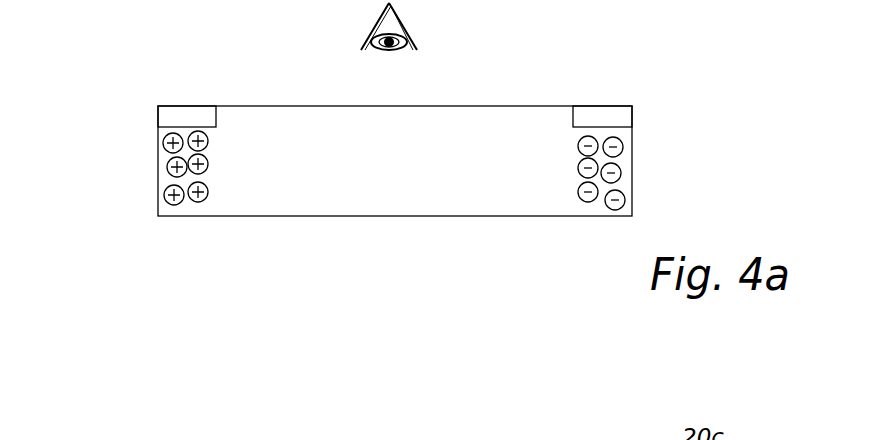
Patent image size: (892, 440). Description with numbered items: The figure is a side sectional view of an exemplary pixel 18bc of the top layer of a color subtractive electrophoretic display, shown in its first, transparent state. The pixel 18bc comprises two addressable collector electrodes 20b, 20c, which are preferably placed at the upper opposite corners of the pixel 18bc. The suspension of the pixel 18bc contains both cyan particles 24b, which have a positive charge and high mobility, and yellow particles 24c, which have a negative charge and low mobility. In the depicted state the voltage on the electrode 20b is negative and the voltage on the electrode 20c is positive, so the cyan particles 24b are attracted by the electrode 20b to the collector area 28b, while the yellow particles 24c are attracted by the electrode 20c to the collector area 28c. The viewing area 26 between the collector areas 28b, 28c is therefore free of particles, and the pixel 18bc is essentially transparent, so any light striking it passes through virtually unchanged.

The pixel 18bc is at (698, 163).
The collector electrode 20b is at (168, 118).
The collector electrode 20c is at (622, 117).
The cyan particles 24b is at (205, 199).
The yellow particles 24c is at (621, 174).
The viewing area 26 is at (572, 223).
The collector area 28b is at (217, 223).
The collector area 28c is at (631, 223).